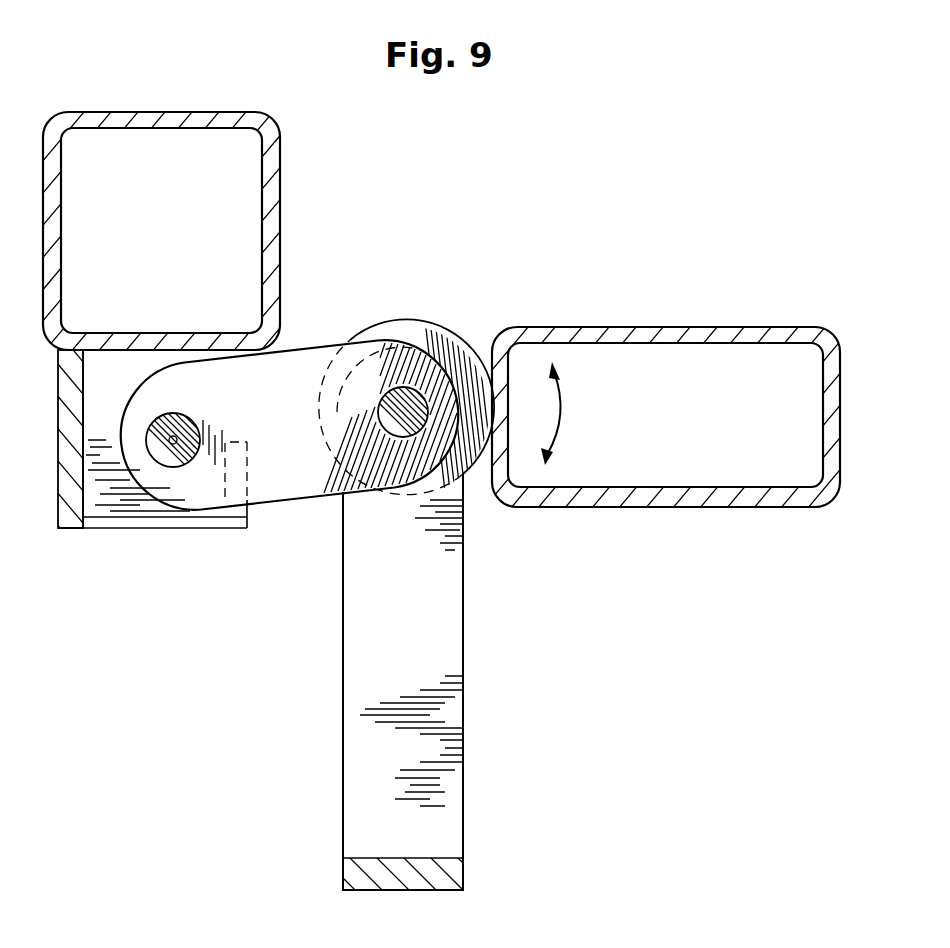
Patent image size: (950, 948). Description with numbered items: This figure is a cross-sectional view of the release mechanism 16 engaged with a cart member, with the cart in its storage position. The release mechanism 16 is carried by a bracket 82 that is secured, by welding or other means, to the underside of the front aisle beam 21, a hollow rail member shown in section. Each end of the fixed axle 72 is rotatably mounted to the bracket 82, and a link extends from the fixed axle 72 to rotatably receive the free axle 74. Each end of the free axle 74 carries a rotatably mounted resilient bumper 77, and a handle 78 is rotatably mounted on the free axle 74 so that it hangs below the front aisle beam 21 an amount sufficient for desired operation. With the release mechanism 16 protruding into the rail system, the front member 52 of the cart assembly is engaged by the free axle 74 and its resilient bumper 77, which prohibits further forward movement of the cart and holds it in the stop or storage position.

The release mechanism 16 is at (286, 543).
The front aisle beam 21 is at (182, 118).
The front member 52 is at (833, 438).
The fixed axle 72 is at (177, 467).
The free axle 74 is at (392, 390).
The resilient bumpers 77 is at (440, 348).
The handle 78 is at (447, 650).
The bracket 82 is at (62, 524).